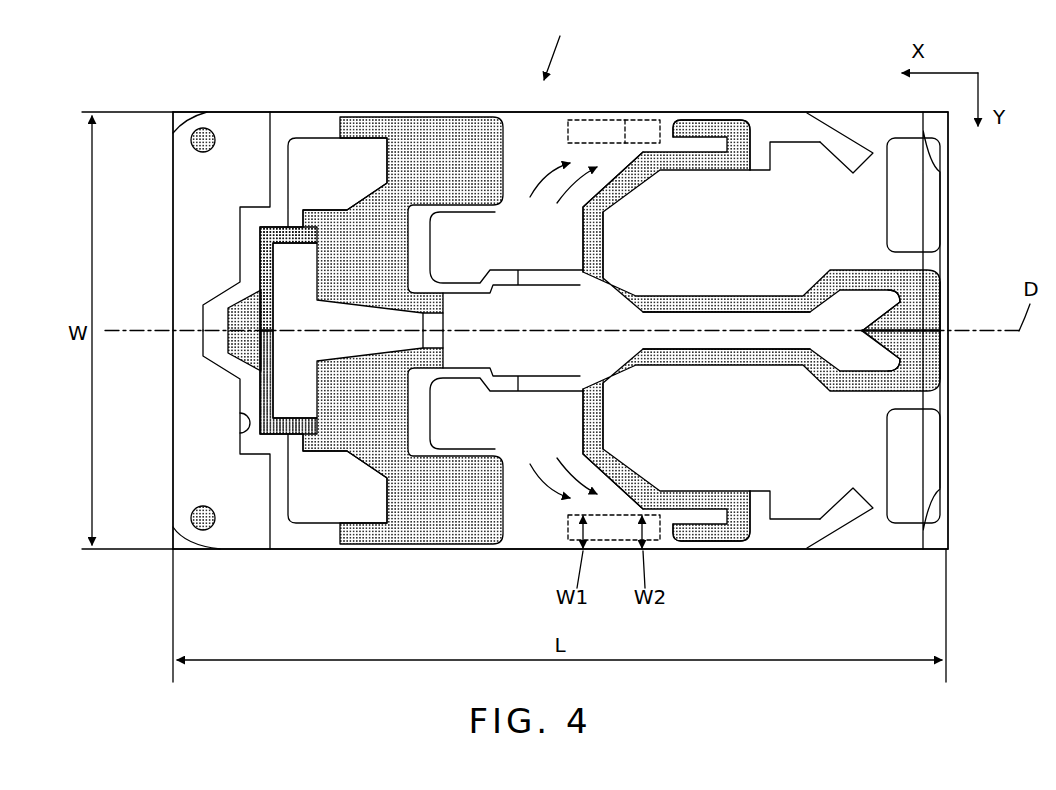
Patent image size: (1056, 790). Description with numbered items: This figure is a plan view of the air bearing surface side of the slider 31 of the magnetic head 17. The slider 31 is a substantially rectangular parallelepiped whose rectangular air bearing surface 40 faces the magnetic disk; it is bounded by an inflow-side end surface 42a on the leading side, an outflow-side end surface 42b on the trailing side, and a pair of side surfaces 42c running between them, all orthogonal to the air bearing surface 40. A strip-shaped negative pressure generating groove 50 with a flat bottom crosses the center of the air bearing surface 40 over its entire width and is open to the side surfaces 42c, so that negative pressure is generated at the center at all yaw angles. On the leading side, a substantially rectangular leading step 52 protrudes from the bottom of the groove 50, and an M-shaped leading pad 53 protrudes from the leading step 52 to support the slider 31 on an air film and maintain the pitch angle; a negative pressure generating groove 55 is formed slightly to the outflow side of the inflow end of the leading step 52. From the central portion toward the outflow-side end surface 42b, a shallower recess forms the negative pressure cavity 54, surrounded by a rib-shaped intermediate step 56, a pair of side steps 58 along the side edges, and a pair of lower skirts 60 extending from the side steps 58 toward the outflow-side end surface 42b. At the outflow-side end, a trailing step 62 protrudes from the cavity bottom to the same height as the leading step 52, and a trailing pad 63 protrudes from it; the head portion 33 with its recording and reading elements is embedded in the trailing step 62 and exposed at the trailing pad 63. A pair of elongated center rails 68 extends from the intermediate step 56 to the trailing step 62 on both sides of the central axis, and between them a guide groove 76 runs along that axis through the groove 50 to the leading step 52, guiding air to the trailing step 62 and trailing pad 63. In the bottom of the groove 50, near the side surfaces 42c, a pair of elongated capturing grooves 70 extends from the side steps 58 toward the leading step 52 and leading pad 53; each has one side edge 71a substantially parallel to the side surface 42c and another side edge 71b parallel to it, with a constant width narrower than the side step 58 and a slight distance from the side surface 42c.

The magnetic head 17 is at (559, 44).
The slider 31 is at (872, 552).
The head portion 33 is at (940, 307).
The air bearing surface 40 is at (459, 140).
The inflow-side end surface 42a is at (172, 228).
The outflow-side end surface 42b is at (950, 439).
The side surfaces 42c is at (641, 112).
The negative pressure generating groove 50 is at (528, 153).
The leading step 52 is at (249, 121).
The leading pad 53 is at (441, 551).
The negative pressure cavity 54 is at (777, 195).
The negative pressure generating groove 55 is at (240, 424).
The intermediate step 56 is at (628, 192).
The side steps 58 is at (698, 121).
The skirts 60 is at (845, 152).
The trailing step 62 is at (905, 375).
The trailing pad 63 is at (922, 356).
The center rails 68 is at (718, 296).
The capturing grooves 70 is at (608, 130).
The one side edge 71a is at (600, 125).
The other side edge 71b is at (620, 125).
The guide groove 76 is at (675, 343).